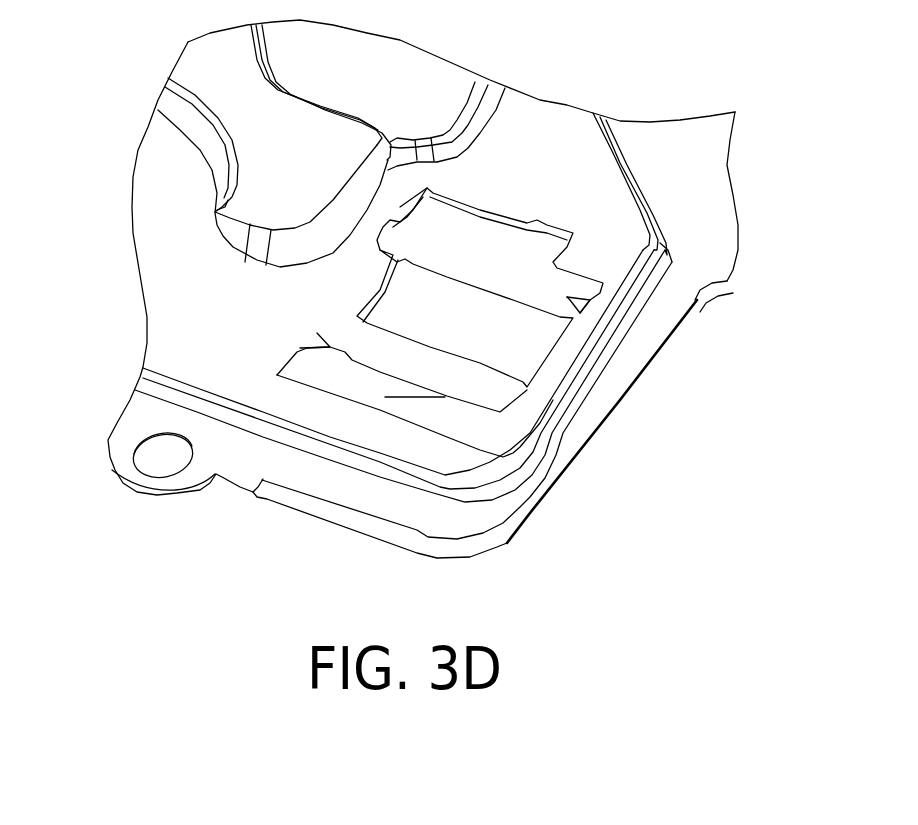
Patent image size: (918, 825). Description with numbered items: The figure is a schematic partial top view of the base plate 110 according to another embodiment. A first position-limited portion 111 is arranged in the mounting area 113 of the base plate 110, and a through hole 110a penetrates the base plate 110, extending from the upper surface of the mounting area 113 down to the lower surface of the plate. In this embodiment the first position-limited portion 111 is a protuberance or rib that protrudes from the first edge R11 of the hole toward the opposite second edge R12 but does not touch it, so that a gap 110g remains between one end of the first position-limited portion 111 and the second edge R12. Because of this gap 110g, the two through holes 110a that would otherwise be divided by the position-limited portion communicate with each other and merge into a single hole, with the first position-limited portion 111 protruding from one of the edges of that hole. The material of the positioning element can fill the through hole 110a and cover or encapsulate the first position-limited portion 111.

The base plate 110 is at (675, 177).
The through hole 110a is at (480, 242).
The gap 110g is at (367, 297).
The first position-limited portion 111 is at (532, 348).
The mounting area 113 is at (613, 245).
The first edge R11 is at (585, 328).
The second edge R12 is at (330, 347).